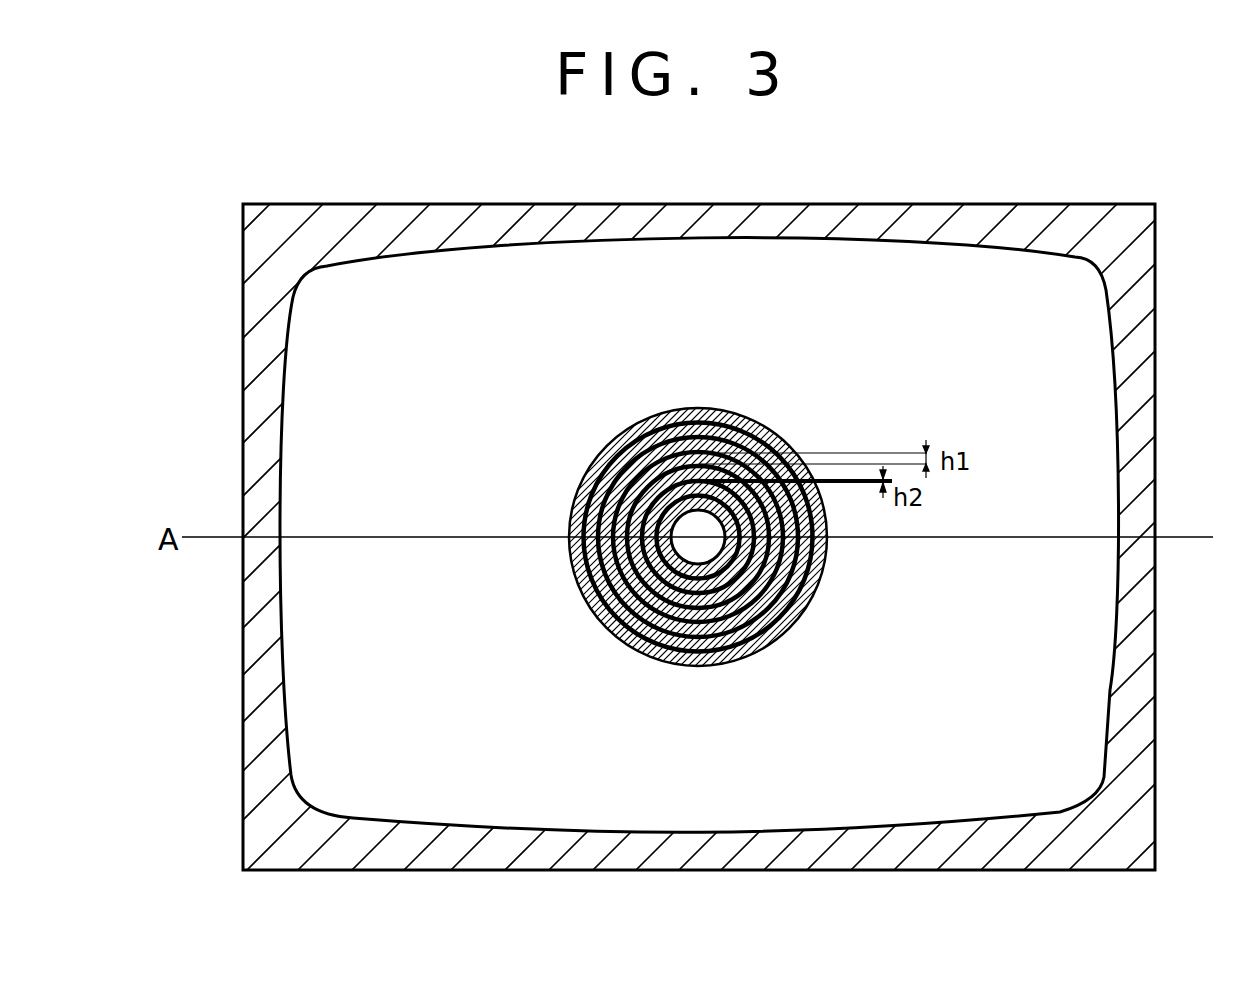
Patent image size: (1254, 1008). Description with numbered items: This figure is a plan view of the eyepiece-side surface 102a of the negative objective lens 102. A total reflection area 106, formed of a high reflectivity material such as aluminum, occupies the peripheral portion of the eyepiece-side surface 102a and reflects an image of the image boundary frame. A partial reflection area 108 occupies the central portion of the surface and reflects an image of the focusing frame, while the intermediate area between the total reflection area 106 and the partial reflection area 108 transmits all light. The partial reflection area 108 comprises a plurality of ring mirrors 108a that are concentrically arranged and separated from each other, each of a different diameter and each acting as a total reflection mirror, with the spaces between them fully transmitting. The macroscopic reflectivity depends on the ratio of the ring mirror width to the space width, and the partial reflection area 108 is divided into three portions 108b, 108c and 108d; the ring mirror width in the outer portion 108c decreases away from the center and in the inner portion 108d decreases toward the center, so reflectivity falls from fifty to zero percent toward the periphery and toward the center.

The negative objective lens 102 is at (241, 770).
The eyepiece-side surface 102a is at (1086, 323).
The total reflection area 106 is at (1040, 218).
The partial reflection area 108 is at (627, 504).
The ring mirrors 108a is at (759, 651).
The portion of the partial reflection area 108b is at (600, 612).
The outer portion 108c is at (574, 567).
The inner portion 108d is at (645, 640).